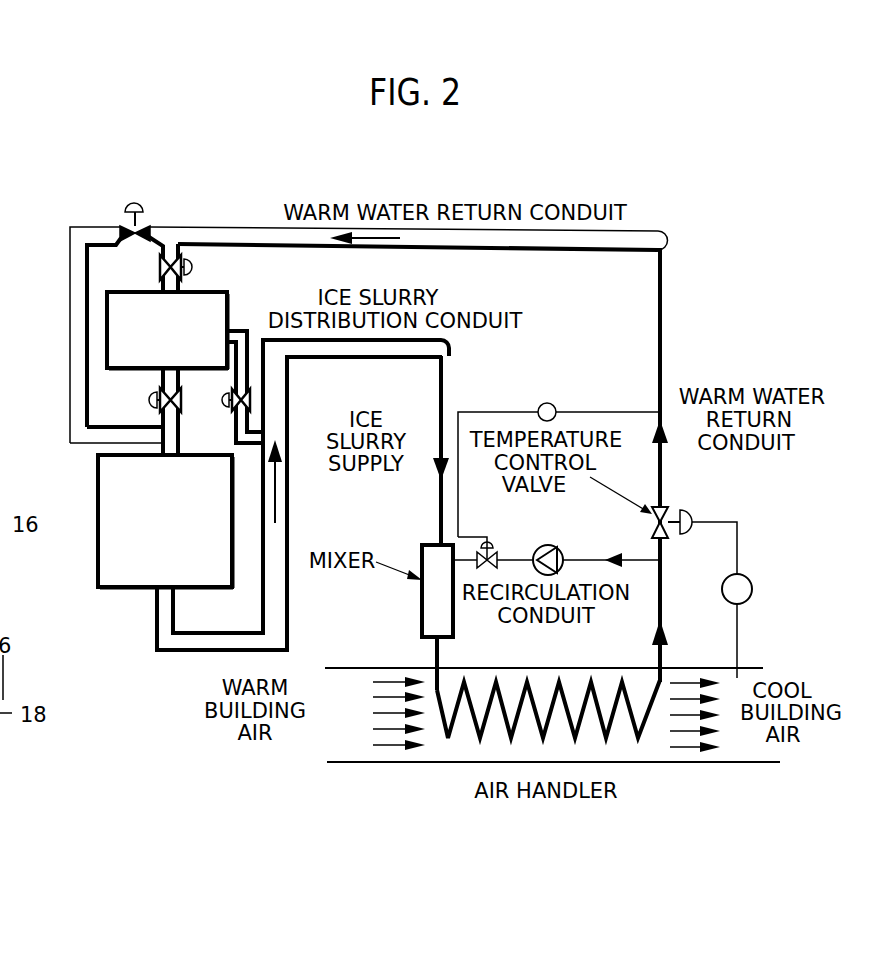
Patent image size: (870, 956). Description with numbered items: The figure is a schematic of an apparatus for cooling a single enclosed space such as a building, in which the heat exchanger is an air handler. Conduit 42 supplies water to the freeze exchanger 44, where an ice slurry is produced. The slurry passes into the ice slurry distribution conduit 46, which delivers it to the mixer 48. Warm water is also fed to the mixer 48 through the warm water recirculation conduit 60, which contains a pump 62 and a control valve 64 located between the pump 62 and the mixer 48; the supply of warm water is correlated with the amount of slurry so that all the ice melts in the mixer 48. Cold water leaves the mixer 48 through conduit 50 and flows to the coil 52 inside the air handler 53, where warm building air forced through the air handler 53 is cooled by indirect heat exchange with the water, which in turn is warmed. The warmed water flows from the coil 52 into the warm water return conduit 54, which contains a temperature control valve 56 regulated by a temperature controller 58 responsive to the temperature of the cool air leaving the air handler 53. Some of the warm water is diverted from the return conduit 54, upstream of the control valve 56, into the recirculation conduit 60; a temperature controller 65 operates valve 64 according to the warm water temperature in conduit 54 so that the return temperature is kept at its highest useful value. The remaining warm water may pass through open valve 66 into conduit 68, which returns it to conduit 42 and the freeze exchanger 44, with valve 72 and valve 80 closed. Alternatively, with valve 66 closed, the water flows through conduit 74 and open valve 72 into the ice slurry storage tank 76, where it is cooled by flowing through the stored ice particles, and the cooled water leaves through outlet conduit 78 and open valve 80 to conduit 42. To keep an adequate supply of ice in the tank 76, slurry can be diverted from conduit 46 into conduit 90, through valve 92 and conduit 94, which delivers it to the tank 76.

The conduit 42 is at (178, 448).
The freeze exchanger 44 is at (98, 505).
The ice slurry distribution conduit 46 is at (446, 400).
The mixer 48 is at (420, 618).
The conduit 50 is at (440, 645).
The coil 52 is at (538, 697).
The air handler 53 is at (425, 763).
The warm water return conduit 54 is at (530, 251).
The temperature control valve 56 is at (672, 508).
The temperature controller 58 is at (752, 585).
The warm water recirculation conduit 60 is at (505, 557).
The pump 62 is at (548, 545).
The control valve 64 is at (485, 540).
The temperature controller 65 is at (550, 403).
The valve 66 is at (140, 230).
The conduit 68 is at (70, 258).
The valve 72 is at (160, 270).
The conduit 74 is at (193, 274).
The ice slurry storage tank 76 is at (232, 300).
The outlet conduit 78 is at (162, 423).
The valve 80 is at (229, 400).
The conduit 90 is at (248, 443).
The valve 92 is at (250, 403).
The conduit 94 is at (247, 332).